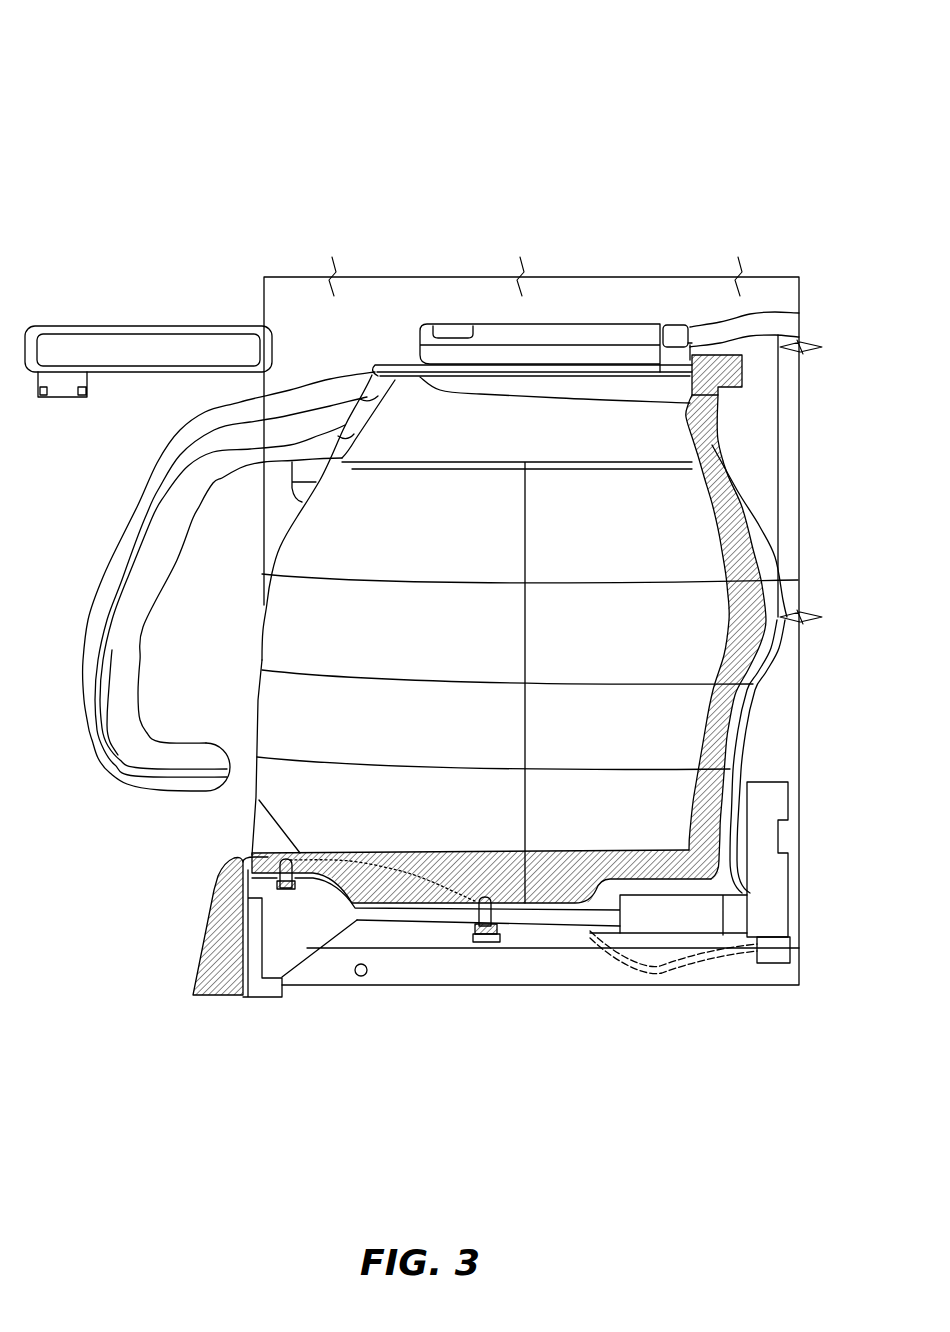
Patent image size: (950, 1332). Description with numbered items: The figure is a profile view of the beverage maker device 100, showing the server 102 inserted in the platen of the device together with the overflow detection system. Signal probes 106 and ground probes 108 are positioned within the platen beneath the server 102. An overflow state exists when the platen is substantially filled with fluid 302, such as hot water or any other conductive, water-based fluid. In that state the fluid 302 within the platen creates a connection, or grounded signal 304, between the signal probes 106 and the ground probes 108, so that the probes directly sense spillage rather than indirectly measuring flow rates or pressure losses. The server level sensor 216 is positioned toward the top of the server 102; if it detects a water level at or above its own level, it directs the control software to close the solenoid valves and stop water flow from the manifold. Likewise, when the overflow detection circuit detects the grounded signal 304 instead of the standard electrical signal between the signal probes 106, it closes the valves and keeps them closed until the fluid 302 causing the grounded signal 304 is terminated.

The beverage maker device 100 is at (86, 72).
The server 102 is at (350, 646).
The signal probes 106 is at (288, 855).
The ground probes 108 is at (497, 945).
The server level sensor 216 is at (668, 323).
The fluid 302 is at (565, 872).
The grounded signal 304 is at (428, 880).